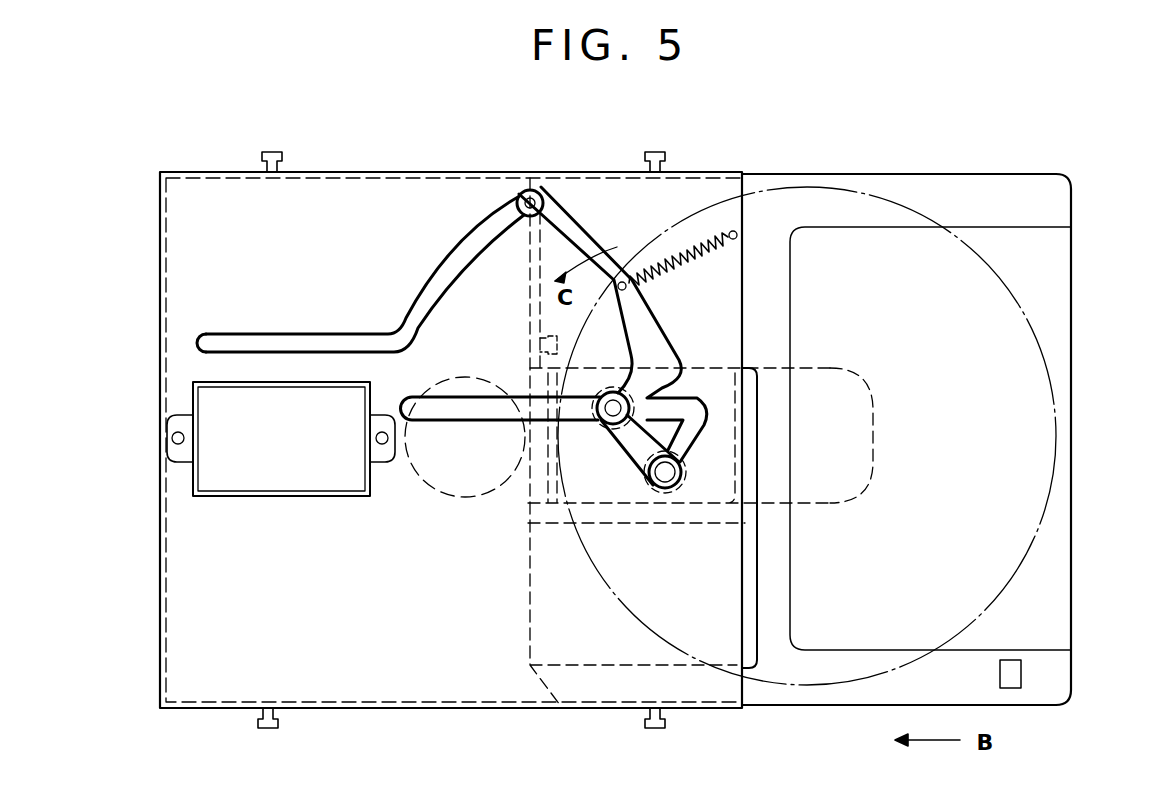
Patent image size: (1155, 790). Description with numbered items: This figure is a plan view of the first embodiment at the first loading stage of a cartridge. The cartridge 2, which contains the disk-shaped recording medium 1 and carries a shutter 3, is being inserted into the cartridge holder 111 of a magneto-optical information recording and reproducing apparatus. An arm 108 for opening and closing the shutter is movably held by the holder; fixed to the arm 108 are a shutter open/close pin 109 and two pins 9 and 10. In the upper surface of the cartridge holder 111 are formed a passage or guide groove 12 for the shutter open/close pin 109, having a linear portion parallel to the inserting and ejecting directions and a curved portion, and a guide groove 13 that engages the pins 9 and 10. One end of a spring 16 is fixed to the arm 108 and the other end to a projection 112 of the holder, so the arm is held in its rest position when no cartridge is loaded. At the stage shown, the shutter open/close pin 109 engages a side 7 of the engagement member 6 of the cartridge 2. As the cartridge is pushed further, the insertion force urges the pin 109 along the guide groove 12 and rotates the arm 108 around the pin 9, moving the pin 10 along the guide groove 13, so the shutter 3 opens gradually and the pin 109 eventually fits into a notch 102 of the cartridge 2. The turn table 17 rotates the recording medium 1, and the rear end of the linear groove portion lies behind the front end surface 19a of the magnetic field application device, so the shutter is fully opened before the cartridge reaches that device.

The disk-shaped recording medium 1 is at (1024, 344).
The cartridge 2 is at (980, 175).
The shutter 3 is at (535, 483).
The engagement member 6 is at (530, 272).
The side of engagement member 7 is at (548, 194).
The pin 9 is at (220, 480).
The pin 10 is at (664, 482).
The guide groove 12 is at (458, 250).
The guide groove 13 is at (697, 400).
The spring 16 is at (712, 232).
The turn table 17 is at (418, 478).
The front end surface of magnetic field application device 19a is at (282, 498).
The notch 102 is at (540, 345).
The arm 108 is at (628, 253).
The shutter open/close pin 109 is at (528, 190).
The cartridge holder 111 is at (204, 190).
The projection 112 is at (743, 229).